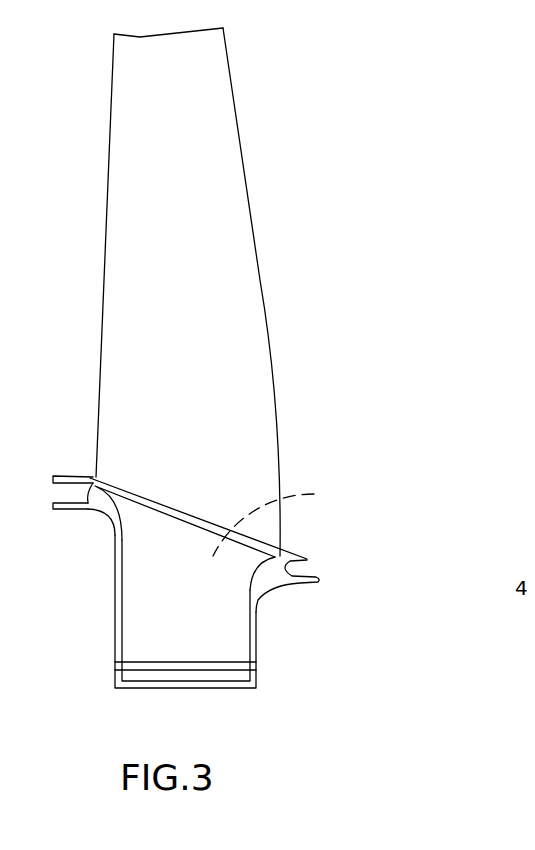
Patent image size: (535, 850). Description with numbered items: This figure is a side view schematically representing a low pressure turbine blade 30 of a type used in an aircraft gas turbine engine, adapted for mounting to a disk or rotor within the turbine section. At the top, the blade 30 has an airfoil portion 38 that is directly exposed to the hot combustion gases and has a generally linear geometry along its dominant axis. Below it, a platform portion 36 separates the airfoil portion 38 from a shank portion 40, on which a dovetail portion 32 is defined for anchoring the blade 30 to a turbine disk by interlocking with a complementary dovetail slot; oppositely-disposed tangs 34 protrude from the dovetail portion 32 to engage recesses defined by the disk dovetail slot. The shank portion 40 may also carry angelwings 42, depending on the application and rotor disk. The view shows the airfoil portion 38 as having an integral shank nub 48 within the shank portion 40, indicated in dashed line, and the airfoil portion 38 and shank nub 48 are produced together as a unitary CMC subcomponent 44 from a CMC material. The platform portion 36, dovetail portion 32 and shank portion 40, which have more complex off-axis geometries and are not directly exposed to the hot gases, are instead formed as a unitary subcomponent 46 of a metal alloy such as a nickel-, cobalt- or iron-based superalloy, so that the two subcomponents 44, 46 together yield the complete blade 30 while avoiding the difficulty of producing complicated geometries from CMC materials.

The low pressure turbine blade 30 is at (272, 100).
The dovetail portion 32 is at (257, 680).
The tangs 34 is at (128, 677).
The platform portion 36 is at (65, 472).
The airfoil portion 38 is at (240, 223).
The shank portion 40 is at (257, 655).
The angelwings 42 is at (316, 579).
The unitary CMC subcomponent 44 is at (270, 358).
The unitary subcomponent 46 is at (87, 514).
The shank nub 48 is at (277, 518).